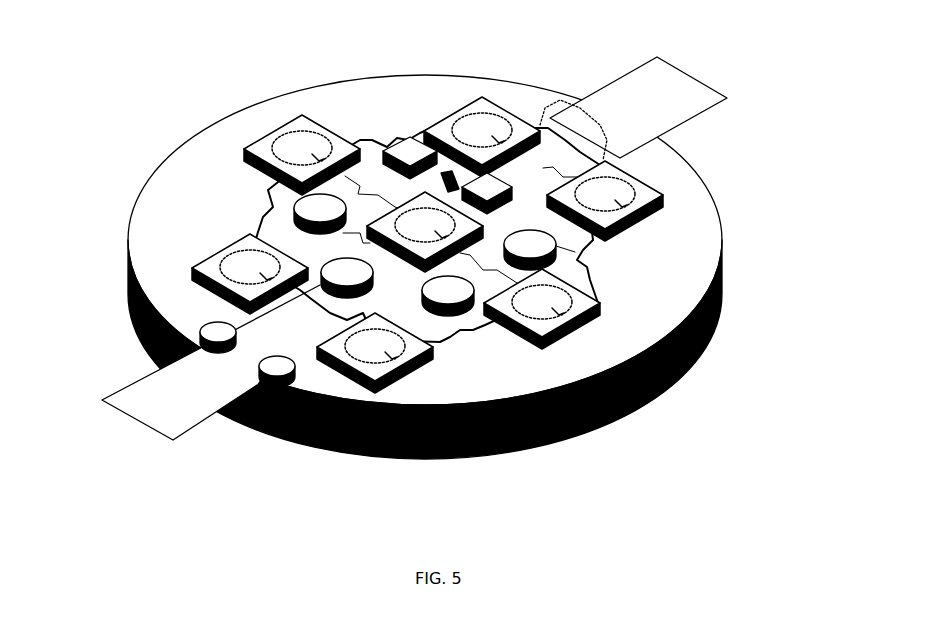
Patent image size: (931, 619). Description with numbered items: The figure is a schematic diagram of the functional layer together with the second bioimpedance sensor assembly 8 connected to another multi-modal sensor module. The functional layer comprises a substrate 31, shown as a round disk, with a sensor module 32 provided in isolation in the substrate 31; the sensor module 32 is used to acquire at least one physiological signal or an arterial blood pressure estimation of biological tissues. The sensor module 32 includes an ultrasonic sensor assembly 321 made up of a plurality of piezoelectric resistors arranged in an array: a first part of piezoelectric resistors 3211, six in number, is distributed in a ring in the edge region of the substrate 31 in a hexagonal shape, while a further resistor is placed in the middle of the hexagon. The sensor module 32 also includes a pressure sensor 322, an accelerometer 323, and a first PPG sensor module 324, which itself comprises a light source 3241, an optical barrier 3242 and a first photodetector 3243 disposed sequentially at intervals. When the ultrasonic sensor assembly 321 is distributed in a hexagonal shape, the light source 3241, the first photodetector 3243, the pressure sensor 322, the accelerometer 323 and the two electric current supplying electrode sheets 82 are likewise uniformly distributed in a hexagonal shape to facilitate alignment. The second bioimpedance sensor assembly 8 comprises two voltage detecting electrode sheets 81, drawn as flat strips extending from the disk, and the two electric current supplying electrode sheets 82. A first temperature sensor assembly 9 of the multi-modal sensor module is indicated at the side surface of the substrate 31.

The second bioimpedance sensor assembly 8 is at (385, 289).
The voltage detecting electrode sheet 81 is at (118, 403).
The electric current supplying electrode sheet 82 is at (313, 213).
The first temperature sensor assembly 9 is at (700, 353).
The substrate 31 is at (697, 248).
The sensor module 32 is at (452, 263).
The ultrasonic sensor assembly 321 is at (523, 235).
The pressure sensor 322 is at (553, 248).
The accelerometer 323 is at (455, 327).
The first PPG sensor module 324 is at (575, 196).
The piezoelectric resistor 3211 is at (270, 150).
The light source 3241 is at (410, 155).
The optical barrier 3242 is at (447, 170).
The first photodetector 3243 is at (487, 185).